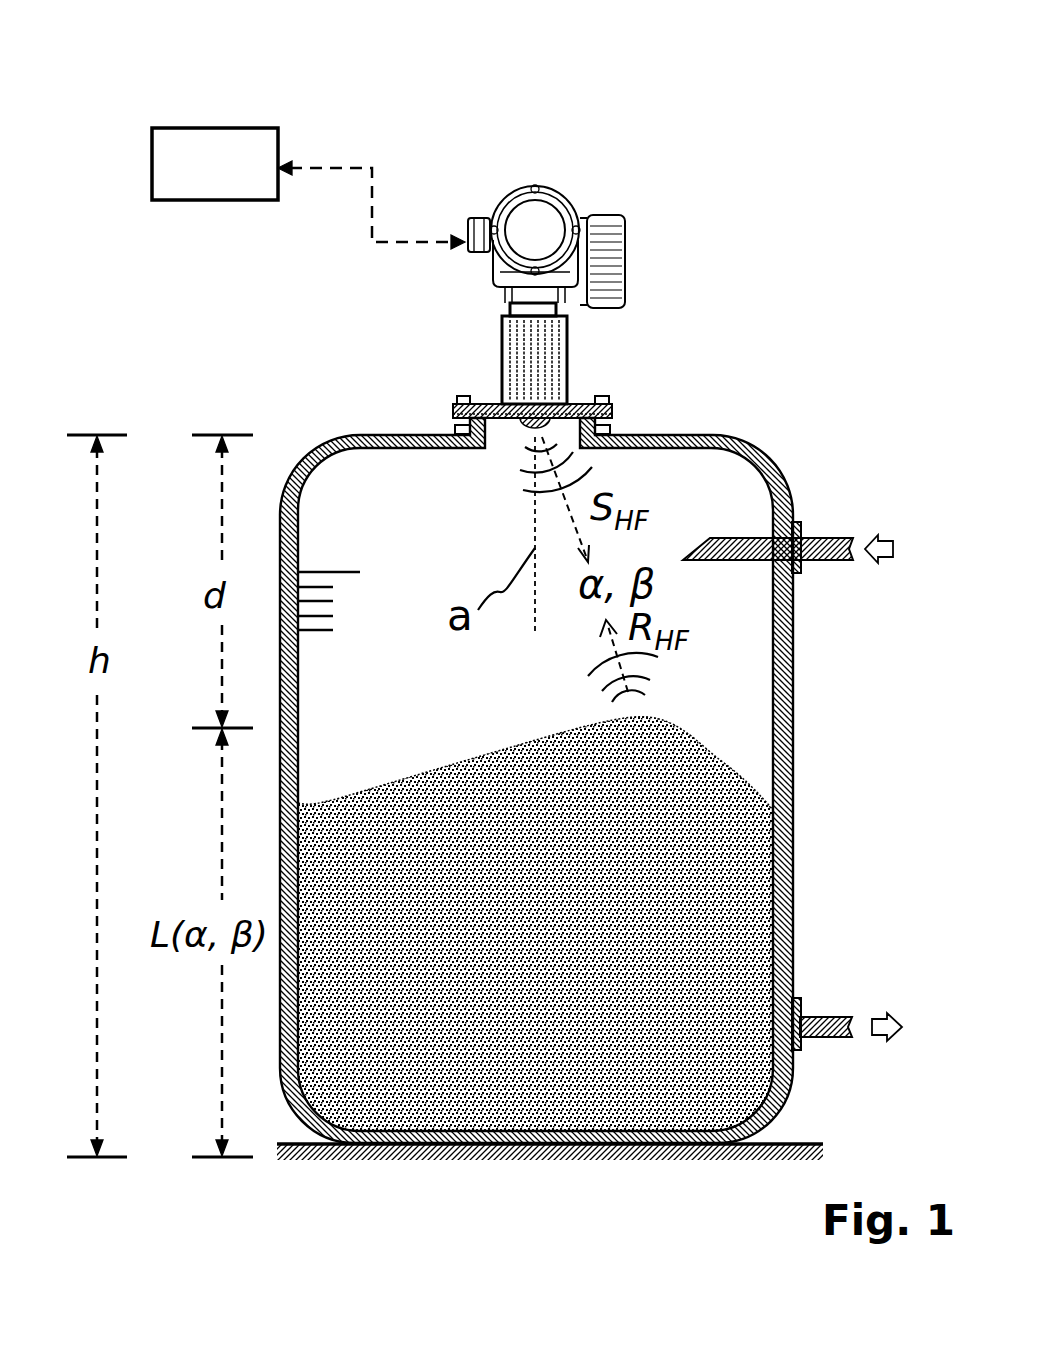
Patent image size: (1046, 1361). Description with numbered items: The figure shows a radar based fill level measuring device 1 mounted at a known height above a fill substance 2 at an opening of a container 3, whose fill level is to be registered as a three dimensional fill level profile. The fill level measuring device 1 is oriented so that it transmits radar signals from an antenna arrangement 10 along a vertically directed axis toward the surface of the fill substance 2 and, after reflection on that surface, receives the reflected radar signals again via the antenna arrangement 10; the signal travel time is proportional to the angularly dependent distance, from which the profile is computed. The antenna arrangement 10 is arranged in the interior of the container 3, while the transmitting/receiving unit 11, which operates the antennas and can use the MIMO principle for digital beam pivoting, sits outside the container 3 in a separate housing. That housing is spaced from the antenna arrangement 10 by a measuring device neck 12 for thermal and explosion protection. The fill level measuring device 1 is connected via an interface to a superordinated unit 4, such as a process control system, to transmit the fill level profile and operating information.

The fill level measuring device 1 is at (522, 272).
The fill substance 2 is at (559, 878).
The container 3 is at (792, 865).
The superordinated unit 4 is at (226, 190).
The antenna arrangement 10 is at (533, 425).
The transmitting/receiving unit 11 is at (510, 310).
The measuring device neck 12 is at (568, 365).